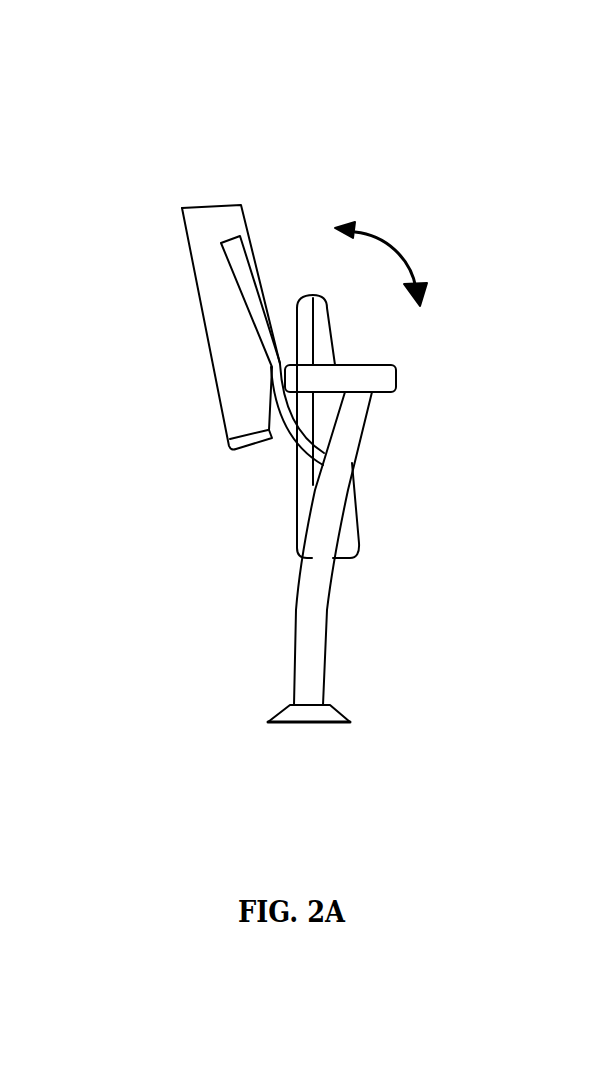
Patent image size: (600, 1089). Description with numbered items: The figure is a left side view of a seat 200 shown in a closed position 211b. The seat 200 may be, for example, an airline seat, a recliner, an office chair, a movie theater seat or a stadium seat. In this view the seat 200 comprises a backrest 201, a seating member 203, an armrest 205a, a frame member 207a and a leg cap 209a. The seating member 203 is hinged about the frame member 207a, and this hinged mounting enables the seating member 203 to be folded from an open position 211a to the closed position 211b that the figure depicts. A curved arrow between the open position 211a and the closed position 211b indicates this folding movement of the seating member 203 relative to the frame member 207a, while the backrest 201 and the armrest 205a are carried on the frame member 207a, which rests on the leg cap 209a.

The seat 200 is at (162, 80).
The backrest 201 is at (187, 235).
The seating member 203 is at (293, 498).
The armrest 205a is at (397, 378).
The frame member 207a is at (327, 634).
The leg cap 209a is at (277, 713).
The open position 211a is at (401, 287).
The closed position 211b is at (318, 232).